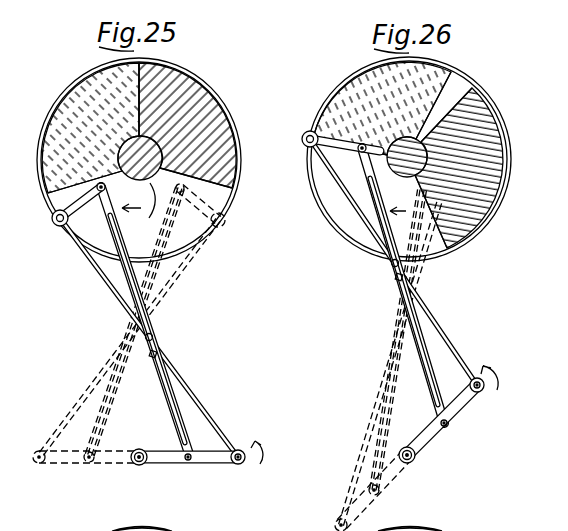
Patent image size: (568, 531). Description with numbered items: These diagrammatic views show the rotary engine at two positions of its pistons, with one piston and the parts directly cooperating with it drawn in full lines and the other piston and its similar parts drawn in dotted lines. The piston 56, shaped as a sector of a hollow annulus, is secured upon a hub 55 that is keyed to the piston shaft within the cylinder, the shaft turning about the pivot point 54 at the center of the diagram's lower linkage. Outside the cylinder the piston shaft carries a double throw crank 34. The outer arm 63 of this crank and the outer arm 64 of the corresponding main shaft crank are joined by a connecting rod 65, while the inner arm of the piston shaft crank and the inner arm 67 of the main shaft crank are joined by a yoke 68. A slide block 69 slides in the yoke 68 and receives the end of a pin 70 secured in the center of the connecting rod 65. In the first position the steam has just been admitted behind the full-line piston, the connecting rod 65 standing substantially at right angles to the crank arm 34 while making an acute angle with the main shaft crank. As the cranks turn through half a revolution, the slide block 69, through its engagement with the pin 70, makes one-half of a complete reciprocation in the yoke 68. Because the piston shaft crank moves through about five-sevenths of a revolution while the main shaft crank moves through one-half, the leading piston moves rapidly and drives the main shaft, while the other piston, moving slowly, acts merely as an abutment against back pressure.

In FIG. 25, the piston 56 is at (214, 101).
In FIG. 26, the piston 56 is at (482, 113).
In FIG. 25, the hub 55 is at (140, 147).
In FIG. 26, the hub 55 is at (420, 136).
In FIG. 25, the double throw crank 34 is at (132, 195).
In FIG. 26, the double throw crank 34 is at (398, 195).
In FIG. 25, the outer arm of the piston shaft crank 63 is at (82, 204).
In FIG. 26, the outer arm of the piston shaft crank 63 is at (355, 146).
In FIG. 25, the connecting rod 65 is at (208, 407).
In FIG. 26, the connecting rod 65 is at (451, 346).
In FIG. 25, the yoke 68 is at (122, 322).
In FIG. 26, the yoke 68 is at (372, 285).
In FIG. 25, the slide block 69 is at (155, 360).
In FIG. 26, the slide block 69 is at (398, 280).
In FIG. 25, the pin 70 is at (153, 339).
In FIG. 26, the pin 70 is at (393, 266).
In FIG. 25, the inner arm of the main shaft crank 67 is at (159, 464).
In FIG. 26, the inner arm of the main shaft crank 67 is at (420, 452).
In FIG. 25, the pivot 54 is at (136, 464).
In FIG. 26, the pivot 54 is at (408, 462).
In FIG. 25, the outer arm of the main shaft crank 64 is at (217, 463).
In FIG. 26, the outer arm of the main shaft crank 64 is at (462, 413).